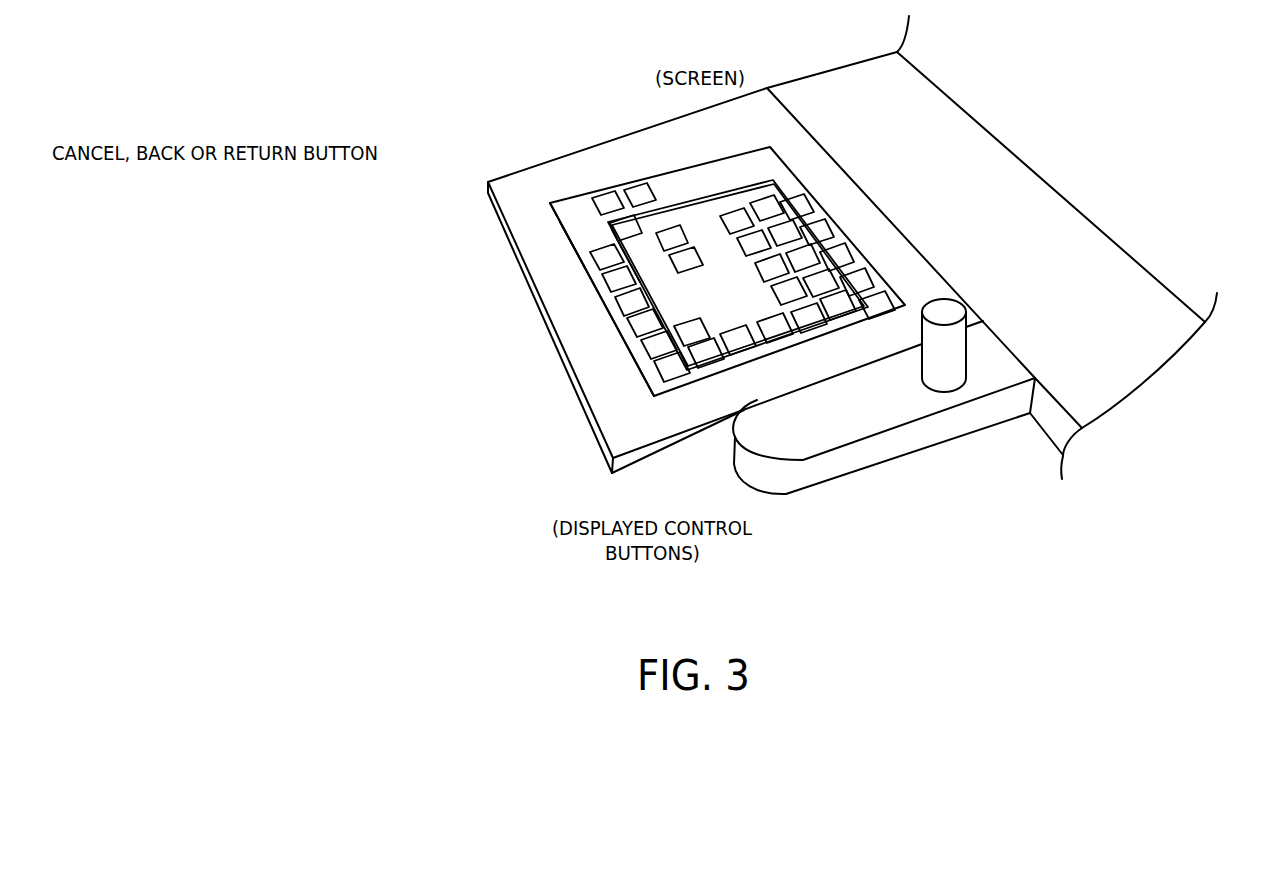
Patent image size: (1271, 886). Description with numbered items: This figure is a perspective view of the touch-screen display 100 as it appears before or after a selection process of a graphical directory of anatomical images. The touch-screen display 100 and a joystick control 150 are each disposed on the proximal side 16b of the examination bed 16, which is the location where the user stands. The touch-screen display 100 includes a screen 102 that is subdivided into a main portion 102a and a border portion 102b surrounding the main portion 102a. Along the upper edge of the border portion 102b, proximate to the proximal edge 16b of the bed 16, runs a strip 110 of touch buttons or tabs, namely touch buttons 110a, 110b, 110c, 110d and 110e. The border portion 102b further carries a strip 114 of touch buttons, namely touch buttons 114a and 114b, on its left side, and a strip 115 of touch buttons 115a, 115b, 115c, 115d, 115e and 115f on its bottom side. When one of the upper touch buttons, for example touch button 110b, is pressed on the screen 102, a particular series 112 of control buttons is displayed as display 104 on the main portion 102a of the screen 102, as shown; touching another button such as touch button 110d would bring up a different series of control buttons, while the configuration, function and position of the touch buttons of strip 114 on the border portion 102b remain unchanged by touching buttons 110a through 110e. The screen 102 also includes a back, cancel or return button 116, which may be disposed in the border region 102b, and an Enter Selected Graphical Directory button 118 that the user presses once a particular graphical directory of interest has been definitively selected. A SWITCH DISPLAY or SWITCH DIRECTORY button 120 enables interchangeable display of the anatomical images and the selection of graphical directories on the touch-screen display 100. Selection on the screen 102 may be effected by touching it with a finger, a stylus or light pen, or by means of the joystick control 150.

The examination bed 16 is at (1023, 187).
The proximal side of the examination bed 16b is at (813, 197).
The touch-screen display 100 is at (537, 182).
The screen 102 is at (682, 212).
The main portion of the screen 102a is at (761, 101).
The border portion of the screen 102b is at (550, 200).
The display 104 is at (784, 187).
The strip of touch buttons 110 is at (885, 232).
The touch button 110a is at (787, 193).
The touch button 110b is at (806, 218).
The touch button 110c is at (826, 243).
The touch button 110d is at (846, 268).
The touch button 110e is at (866, 292).
The series of control buttons 112 is at (746, 343).
The strip of touch buttons 114 is at (599, 156).
The touch button 114a is at (606, 197).
The touch button 114b is at (634, 190).
The strip of touch buttons 115 is at (557, 345).
The touch button 115a is at (596, 256).
The touch button 115b is at (607, 281).
The touch button 115c is at (620, 303).
The touch button 115d is at (633, 325).
The touch button 115e is at (647, 347).
The touch button 115f is at (614, 399).
The back, cancel, or return button 116 is at (601, 228).
The Enter Selected Graphical Directory button 118 is at (578, 240).
The SWITCH DISPLAY or SWITCH DIRECTORY button 120 is at (585, 258).
The joystick control 150 is at (968, 323).